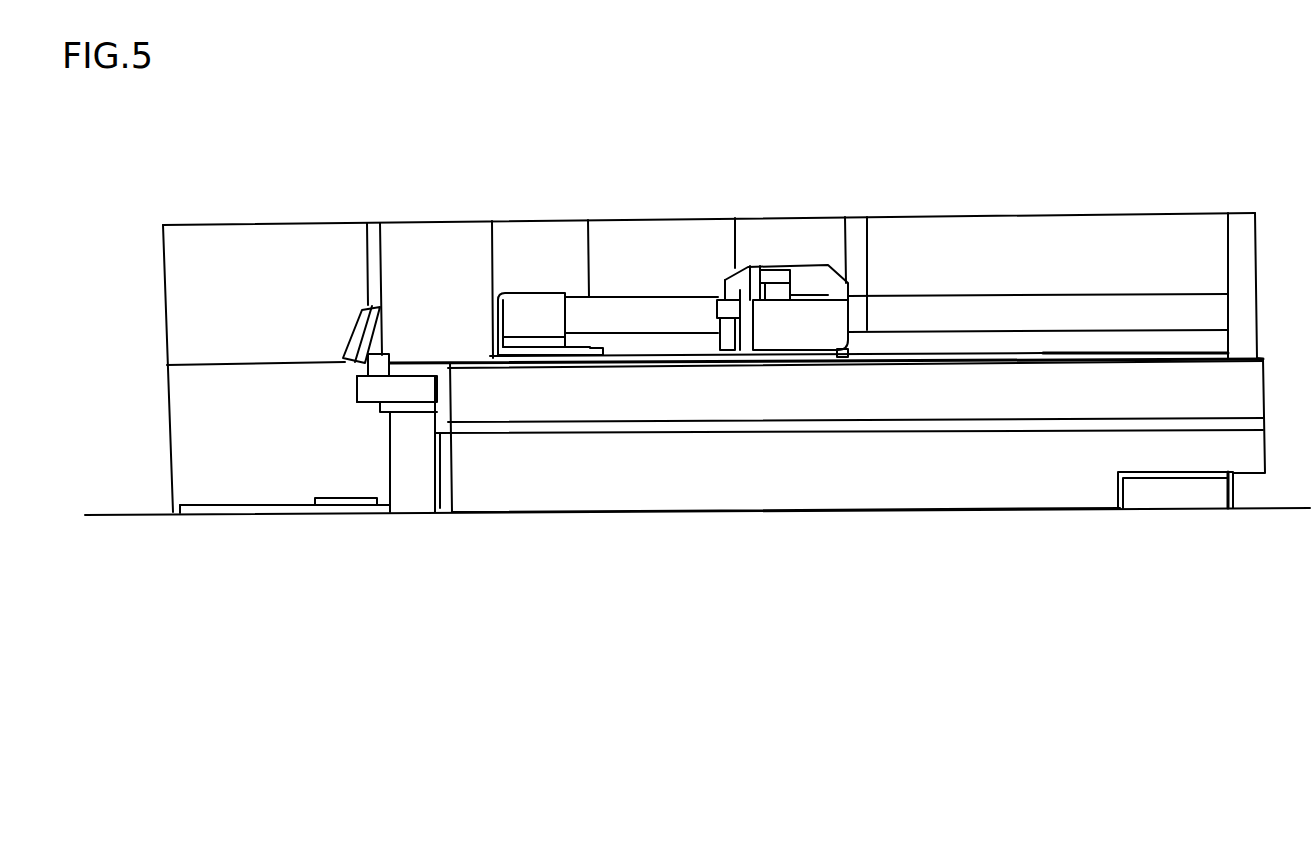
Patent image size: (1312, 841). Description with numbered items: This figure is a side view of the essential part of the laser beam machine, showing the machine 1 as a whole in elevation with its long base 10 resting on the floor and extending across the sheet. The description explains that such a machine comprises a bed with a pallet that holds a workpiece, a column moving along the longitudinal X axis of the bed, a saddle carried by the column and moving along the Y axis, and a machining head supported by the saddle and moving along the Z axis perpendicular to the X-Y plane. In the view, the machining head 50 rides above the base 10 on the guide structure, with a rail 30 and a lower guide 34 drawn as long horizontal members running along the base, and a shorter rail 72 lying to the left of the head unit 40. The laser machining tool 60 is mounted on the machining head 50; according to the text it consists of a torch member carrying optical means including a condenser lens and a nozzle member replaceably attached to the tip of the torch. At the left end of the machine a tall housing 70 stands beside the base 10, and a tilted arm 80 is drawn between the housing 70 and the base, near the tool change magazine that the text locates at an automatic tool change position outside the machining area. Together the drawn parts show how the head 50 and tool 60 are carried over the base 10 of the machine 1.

The machine tool 1 is at (1040, 183).
The base 10 is at (818, 470).
The guide rail 30 is at (850, 318).
The linear guide 34 is at (955, 357).
The head unit 40 is at (803, 272).
The machining head 50 is at (713, 300).
The laser machining tool 60 is at (727, 343).
The housing 70 is at (213, 240).
The rail 72 is at (757, 231).
The arm 80 is at (368, 305).